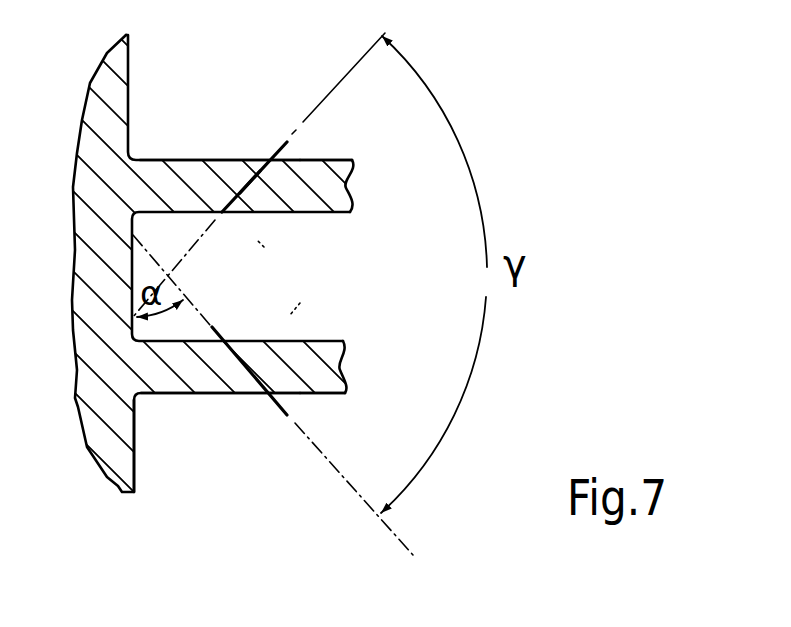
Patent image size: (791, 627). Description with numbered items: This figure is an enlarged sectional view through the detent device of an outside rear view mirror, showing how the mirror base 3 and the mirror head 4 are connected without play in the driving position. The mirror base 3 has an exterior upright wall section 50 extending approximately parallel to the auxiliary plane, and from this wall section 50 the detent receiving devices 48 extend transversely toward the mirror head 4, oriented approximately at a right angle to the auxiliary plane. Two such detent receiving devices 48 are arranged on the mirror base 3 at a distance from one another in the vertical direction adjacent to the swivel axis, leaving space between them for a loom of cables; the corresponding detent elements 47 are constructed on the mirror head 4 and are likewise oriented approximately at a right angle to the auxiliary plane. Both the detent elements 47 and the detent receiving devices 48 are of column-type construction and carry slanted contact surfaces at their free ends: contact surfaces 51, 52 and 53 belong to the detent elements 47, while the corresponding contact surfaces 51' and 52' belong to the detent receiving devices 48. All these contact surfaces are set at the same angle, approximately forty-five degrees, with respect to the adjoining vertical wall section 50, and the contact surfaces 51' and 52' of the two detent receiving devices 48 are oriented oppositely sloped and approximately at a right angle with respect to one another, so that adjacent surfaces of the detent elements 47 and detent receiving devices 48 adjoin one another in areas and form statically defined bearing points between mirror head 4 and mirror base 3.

The mirror base 3 is at (110, 88).
The mirror head 4 is at (343, 188).
The detent element 47 is at (331, 152).
The detent receiving device 48 is at (182, 157).
The exterior upright wall section 50 is at (137, 437).
The slanted contact surface 51 is at (311, 213).
The slanted contact surface 51' is at (253, 146).
The slanted contact surface 52 is at (291, 322).
The slanted contact surface 52' is at (261, 426).
The slanted contact surface 53 is at (247, 229).